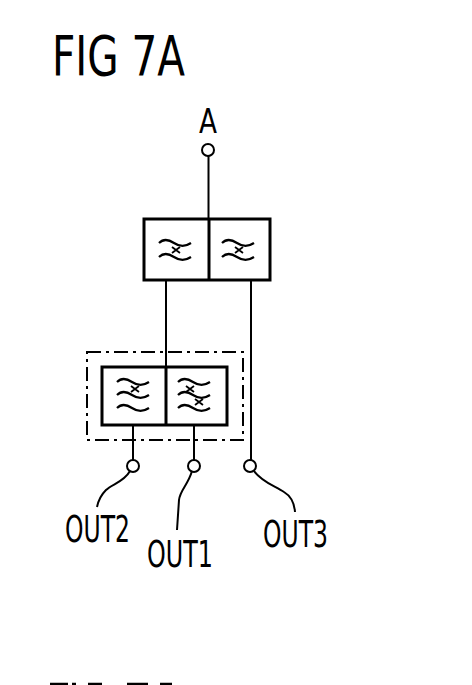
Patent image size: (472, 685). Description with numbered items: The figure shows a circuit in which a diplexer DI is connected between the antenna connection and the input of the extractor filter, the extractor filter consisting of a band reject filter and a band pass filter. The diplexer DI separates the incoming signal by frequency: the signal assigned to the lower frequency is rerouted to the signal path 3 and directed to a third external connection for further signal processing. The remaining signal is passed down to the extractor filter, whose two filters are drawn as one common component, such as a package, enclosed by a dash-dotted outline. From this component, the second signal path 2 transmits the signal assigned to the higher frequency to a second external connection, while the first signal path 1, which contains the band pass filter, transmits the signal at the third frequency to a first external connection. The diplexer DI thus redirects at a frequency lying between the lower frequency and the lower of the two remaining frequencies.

The diplexer DI is at (280, 249).
The first signal path 1 is at (199, 461).
The second signal path 2 is at (129, 462).
The signal path 3 is at (251, 320).